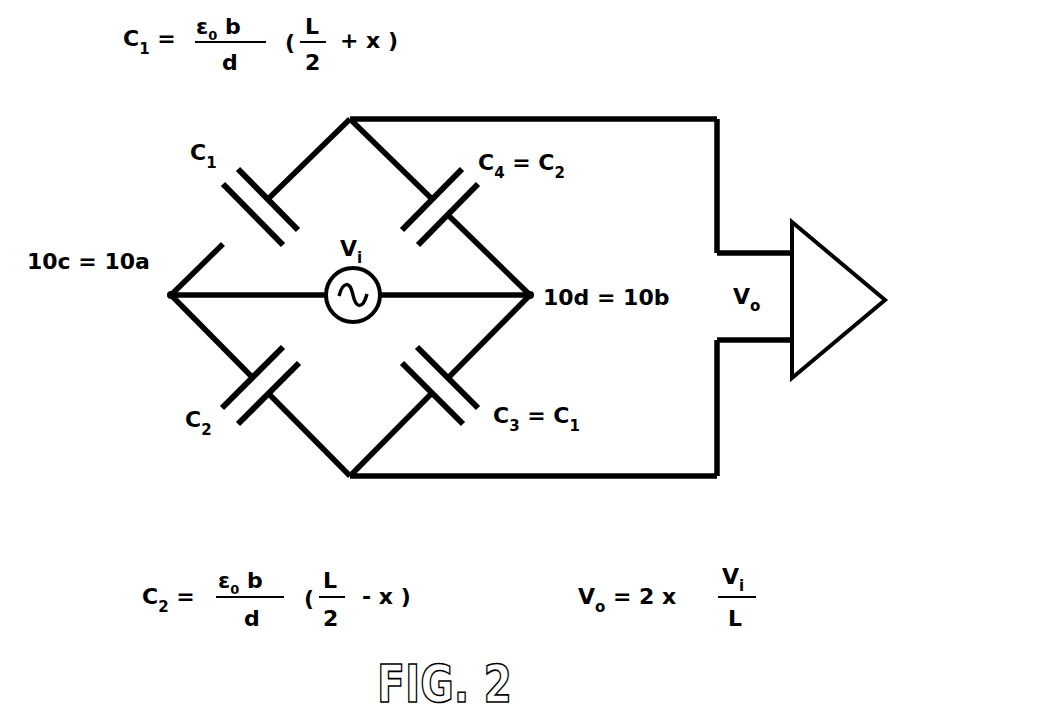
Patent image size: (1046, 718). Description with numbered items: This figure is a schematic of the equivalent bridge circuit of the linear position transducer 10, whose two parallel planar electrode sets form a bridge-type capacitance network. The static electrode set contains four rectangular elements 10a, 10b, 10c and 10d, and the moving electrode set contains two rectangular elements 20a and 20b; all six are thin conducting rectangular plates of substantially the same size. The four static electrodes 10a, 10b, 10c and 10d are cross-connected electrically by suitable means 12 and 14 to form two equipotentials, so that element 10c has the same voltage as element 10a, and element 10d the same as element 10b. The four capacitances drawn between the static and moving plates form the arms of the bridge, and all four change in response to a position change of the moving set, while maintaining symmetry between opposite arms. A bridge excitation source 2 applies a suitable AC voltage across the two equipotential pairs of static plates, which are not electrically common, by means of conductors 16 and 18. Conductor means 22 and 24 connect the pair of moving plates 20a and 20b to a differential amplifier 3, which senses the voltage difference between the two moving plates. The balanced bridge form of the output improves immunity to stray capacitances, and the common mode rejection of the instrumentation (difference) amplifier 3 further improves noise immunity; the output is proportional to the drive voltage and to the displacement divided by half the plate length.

The linear position transducer 10 is at (779, 442).
The bridge excitation source 2 is at (354, 323).
The differential amplifier 3 is at (838, 300).
The rectangular element 10a is at (242, 203).
The rectangular element 10b is at (458, 215).
The rectangular element 10c is at (241, 385).
The rectangular element 10d is at (462, 386).
The cross-connecting means 12 is at (168, 299).
The cross-connecting means 14 is at (534, 300).
The conductor 16 is at (410, 297).
The conductor 18 is at (236, 294).
The rectangular element 20a is at (263, 182).
The rectangular element 20b is at (265, 403).
The conductor means 22 is at (580, 478).
The conductor means 24 is at (585, 117).